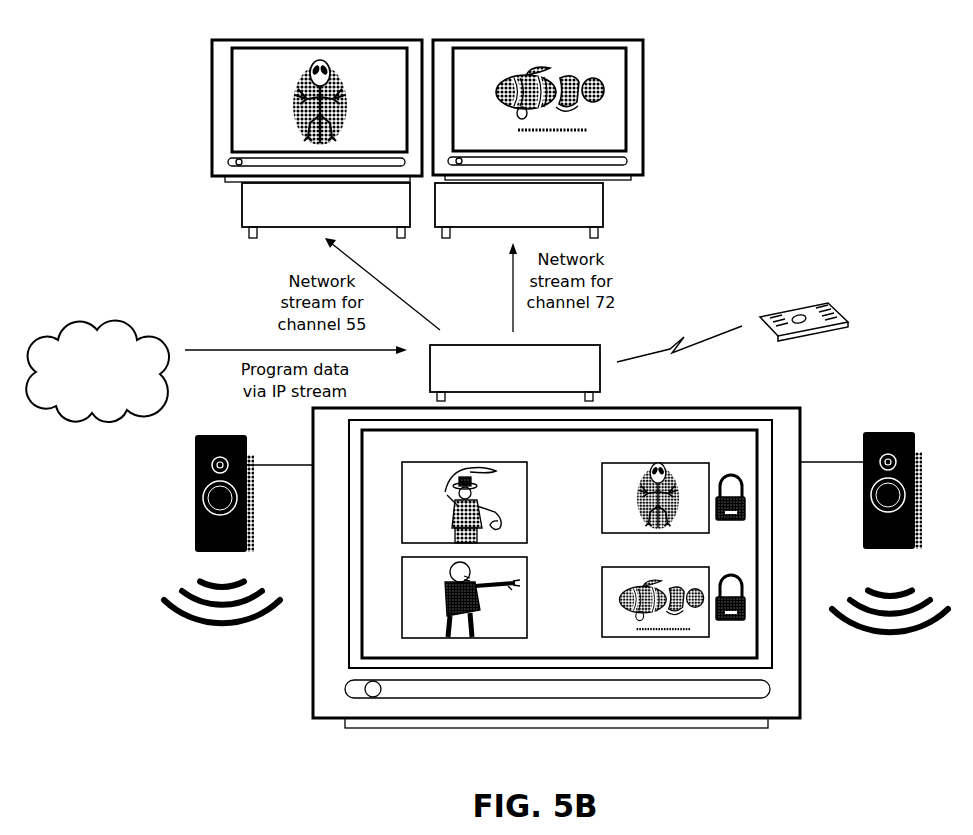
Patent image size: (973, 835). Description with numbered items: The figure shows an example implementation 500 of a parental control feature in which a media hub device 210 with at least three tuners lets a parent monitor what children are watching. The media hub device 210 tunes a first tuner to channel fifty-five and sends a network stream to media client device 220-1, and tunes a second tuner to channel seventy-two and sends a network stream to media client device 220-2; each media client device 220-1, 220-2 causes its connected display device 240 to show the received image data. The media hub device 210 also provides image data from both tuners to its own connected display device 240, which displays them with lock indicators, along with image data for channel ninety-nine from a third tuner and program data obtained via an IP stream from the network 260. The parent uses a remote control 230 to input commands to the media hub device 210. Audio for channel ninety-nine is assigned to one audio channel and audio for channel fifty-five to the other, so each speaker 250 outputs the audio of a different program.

The example implementation 500 is at (113, 64).
The display device 240 is at (212, 98).
The media client device 220-1 is at (326, 210).
The media client device 220-2 is at (519, 210).
The media hub device 210 is at (515, 373).
The remote control 230 is at (790, 312).
The speaker 250 is at (217, 432).
The network 260 is at (97, 371).